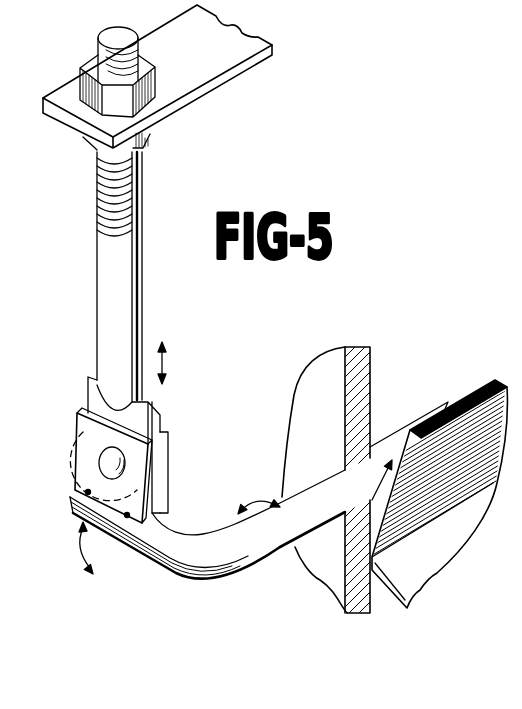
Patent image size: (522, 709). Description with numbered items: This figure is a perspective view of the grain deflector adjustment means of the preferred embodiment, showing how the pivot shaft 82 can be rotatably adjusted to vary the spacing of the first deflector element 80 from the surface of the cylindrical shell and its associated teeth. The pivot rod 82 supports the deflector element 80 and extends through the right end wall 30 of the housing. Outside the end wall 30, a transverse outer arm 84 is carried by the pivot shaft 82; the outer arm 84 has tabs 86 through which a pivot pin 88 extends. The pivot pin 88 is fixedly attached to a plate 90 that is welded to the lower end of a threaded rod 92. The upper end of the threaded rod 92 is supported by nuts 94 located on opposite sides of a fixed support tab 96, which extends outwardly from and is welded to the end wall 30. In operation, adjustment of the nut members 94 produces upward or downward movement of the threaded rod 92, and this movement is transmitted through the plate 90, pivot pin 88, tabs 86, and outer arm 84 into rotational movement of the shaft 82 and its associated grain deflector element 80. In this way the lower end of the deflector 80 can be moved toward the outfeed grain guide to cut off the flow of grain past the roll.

The right end wall 30 is at (363, 373).
The first deflector element 80 is at (478, 387).
The pivot rod 82 is at (276, 549).
The transverse outer arm 84 is at (128, 541).
The tabs 86 is at (82, 428).
The pivot pin 88 is at (107, 459).
The plate 90 is at (148, 408).
The threaded rod 92 is at (135, 294).
The nuts 94 is at (153, 80).
The fixed support tab 96 is at (229, 32).